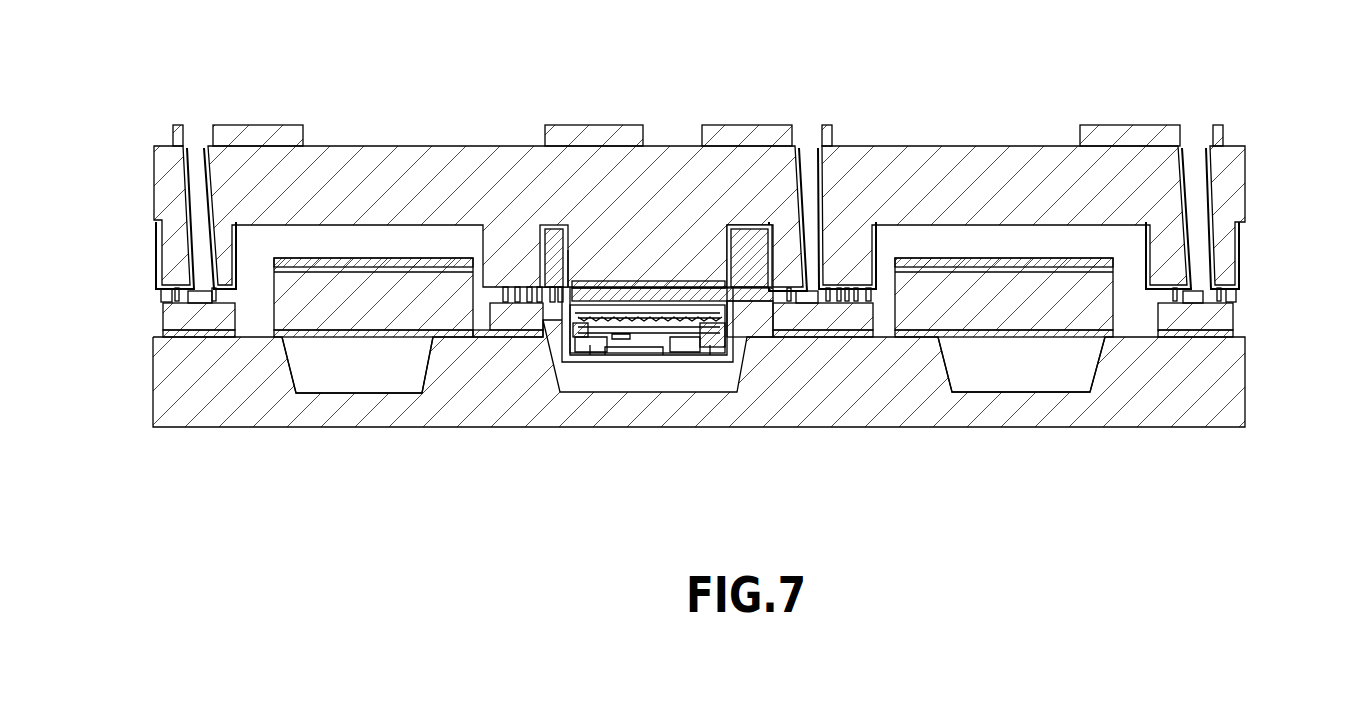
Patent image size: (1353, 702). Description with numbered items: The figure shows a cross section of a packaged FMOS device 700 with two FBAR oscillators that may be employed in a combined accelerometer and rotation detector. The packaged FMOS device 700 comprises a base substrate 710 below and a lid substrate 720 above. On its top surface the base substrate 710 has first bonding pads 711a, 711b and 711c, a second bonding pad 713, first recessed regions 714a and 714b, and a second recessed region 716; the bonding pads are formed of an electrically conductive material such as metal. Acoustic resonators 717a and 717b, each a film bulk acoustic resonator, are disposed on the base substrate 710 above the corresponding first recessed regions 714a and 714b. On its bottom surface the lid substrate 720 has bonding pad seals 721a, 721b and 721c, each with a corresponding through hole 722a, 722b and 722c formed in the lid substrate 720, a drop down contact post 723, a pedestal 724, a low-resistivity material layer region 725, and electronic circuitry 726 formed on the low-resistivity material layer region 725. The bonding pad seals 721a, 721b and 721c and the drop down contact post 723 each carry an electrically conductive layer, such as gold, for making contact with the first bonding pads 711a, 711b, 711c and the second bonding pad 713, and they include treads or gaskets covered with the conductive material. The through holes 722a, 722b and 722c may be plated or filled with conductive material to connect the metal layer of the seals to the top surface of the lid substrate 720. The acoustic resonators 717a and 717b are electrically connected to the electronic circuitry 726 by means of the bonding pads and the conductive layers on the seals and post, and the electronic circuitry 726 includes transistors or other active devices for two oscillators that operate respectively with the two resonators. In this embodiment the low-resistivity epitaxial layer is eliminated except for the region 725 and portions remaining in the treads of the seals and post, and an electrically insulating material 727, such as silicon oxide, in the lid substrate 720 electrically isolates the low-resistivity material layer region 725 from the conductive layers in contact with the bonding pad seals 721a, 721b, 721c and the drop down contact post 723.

The packaged FMOS device 700 is at (1050, 31).
The base substrate 710 is at (1215, 427).
The first bonding pad 711a is at (193, 337).
The first bonding pad 711b is at (1188, 338).
The first bonding pad 711c is at (837, 345).
The second bonding pad 713 is at (520, 342).
The first recessed region 714a is at (390, 380).
The first recessed region 714b is at (1050, 372).
The second recessed region 716 is at (620, 378).
The acoustic resonator 717a is at (328, 342).
The acoustic resonator 717b is at (987, 337).
The lid substrate 720 is at (697, 169).
The bonding pad seal 721a is at (157, 294).
The bonding pad seal 721b is at (1240, 297).
The bonding pad seal 721c is at (872, 297).
The through hole 722a is at (194, 140).
The through hole 722b is at (1195, 140).
The through hole 722c is at (806, 140).
The drop down contact post 723 is at (522, 258).
The pedestal 724 is at (645, 187).
The low-resistivity material layer region 725 is at (676, 290).
The electronic circuitry 726 is at (670, 373).
The electrically insulating material 727 is at (571, 262).